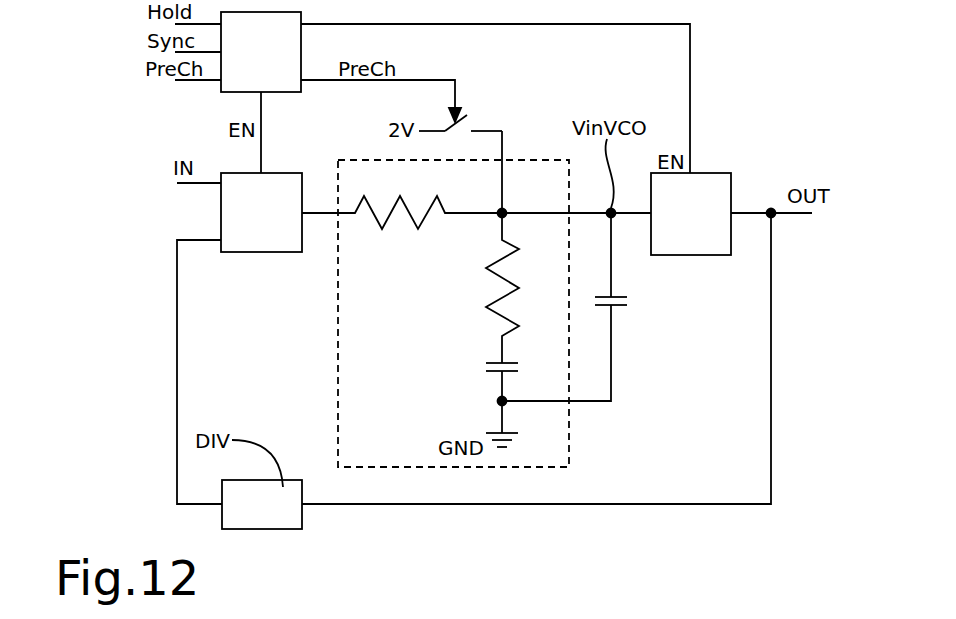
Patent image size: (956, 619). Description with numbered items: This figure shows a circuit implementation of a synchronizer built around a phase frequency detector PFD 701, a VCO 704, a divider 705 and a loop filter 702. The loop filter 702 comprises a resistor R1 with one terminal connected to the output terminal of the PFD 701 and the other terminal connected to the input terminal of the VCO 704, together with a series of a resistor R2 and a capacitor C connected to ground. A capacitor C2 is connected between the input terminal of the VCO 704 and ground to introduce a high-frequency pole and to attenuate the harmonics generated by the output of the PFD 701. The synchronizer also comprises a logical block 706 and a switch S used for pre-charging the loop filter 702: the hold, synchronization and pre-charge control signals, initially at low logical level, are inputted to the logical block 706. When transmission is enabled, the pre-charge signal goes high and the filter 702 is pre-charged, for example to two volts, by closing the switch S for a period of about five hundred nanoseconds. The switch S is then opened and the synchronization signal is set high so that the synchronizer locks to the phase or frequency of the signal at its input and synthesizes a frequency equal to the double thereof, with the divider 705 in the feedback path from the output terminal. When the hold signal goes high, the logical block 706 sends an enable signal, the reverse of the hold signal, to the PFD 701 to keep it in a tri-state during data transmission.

The PFD 701 is at (244, 227).
The loop filter 702 is at (338, 375).
The VCO 704 is at (674, 227).
The divider 705 is at (245, 516).
The logical block 706 is at (244, 64).
The resistor R1 is at (427, 198).
The resistor R2 is at (487, 288).
The capacitor C is at (489, 395).
The capacitor C2 is at (626, 272).
The switch S is at (460, 149).